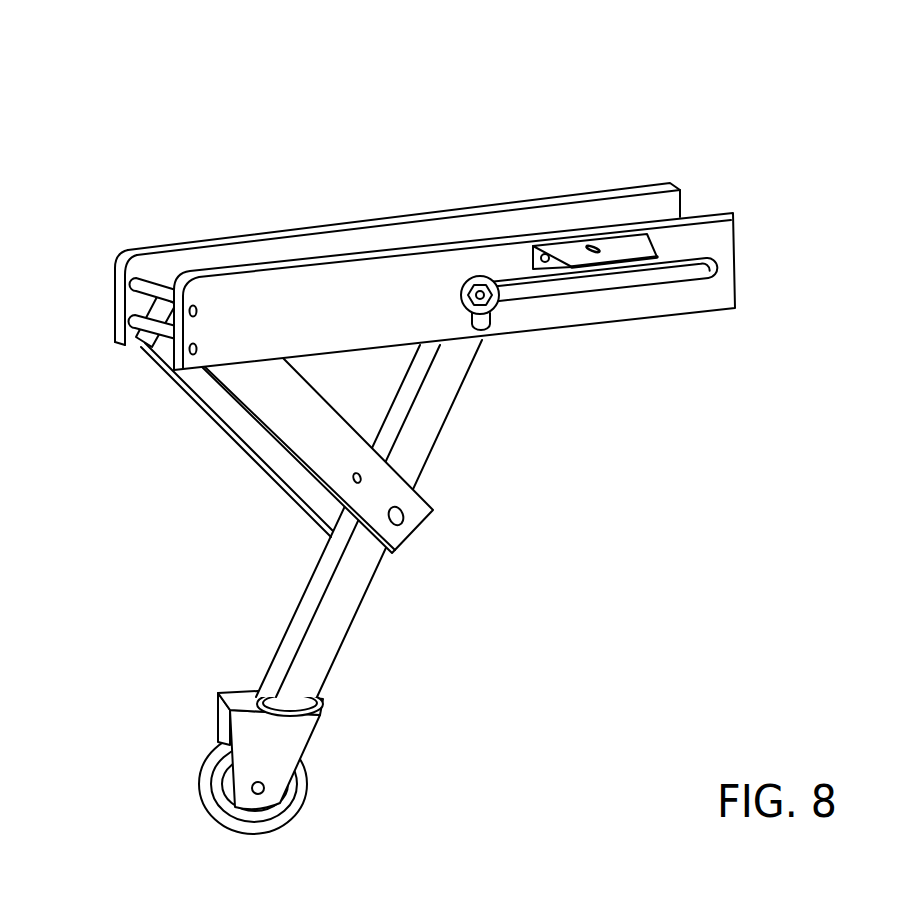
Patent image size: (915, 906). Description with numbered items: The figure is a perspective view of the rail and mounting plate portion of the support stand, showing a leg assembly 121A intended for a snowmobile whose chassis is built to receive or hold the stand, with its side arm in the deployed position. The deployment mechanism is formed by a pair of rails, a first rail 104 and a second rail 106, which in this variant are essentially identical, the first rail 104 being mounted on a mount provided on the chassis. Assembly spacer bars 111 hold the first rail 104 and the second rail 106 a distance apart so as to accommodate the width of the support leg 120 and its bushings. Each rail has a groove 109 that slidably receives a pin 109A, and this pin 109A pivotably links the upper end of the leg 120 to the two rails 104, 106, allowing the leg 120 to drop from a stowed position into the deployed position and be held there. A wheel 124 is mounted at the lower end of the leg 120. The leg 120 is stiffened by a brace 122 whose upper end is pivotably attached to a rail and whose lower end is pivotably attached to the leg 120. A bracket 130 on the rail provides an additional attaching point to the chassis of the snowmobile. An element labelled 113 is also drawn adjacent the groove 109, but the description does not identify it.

The leg assembly 121A is at (522, 136).
The first rail 104 is at (456, 227).
The assembly spacer bars 111 is at (140, 283).
The second rail 106 is at (692, 236).
The groove 109 is at (718, 266).
The pin 109A is at (461, 273).
The slot liner 113 is at (621, 278).
The bracket 130 is at (616, 236).
The brace 122 is at (277, 412).
The support leg 120 is at (337, 617).
The wheel 124 is at (295, 797).